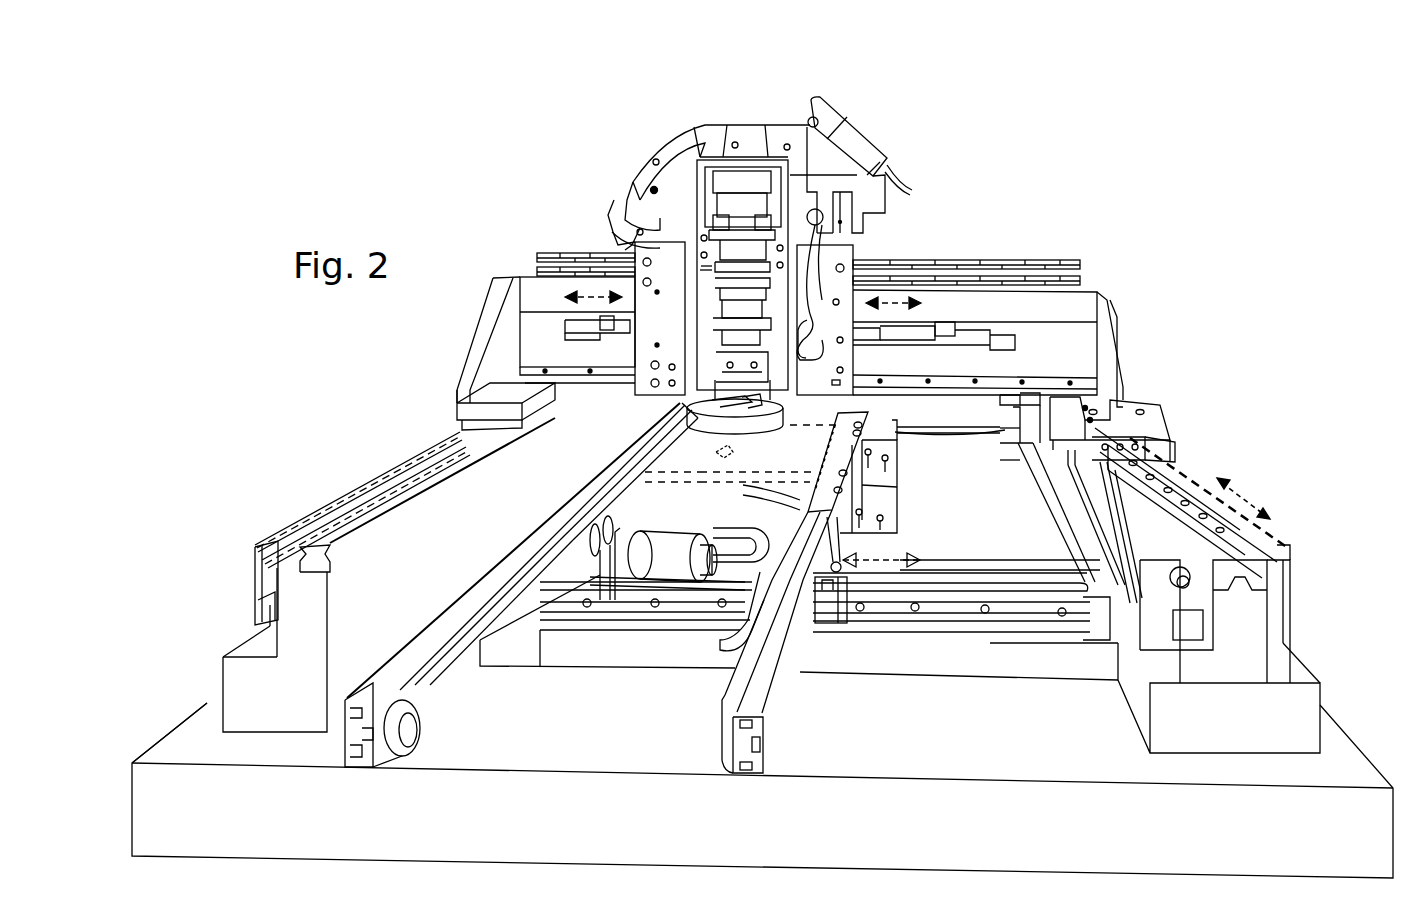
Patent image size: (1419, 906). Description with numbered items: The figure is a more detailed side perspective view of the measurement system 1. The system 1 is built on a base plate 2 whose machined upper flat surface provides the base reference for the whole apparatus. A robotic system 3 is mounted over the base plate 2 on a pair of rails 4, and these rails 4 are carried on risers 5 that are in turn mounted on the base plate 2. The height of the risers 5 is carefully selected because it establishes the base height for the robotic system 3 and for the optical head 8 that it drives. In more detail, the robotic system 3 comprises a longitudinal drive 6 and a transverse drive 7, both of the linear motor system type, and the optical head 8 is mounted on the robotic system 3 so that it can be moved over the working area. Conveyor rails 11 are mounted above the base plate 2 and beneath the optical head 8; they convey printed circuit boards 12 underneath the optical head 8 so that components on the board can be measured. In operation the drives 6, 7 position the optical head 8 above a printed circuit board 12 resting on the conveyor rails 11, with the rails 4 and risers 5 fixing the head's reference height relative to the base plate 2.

The measurement system 1 is at (358, 113).
The base plate 2 is at (178, 706).
The robotic system 3 is at (673, 112).
The rails 4 is at (440, 410).
The risers 5 is at (230, 670).
The longitudinal drive 6 is at (1300, 500).
The transverse drive 7 is at (975, 232).
The optical head 8 is at (685, 216).
The conveyor rails 11 is at (455, 665).
The printed circuit board 12 is at (640, 442).